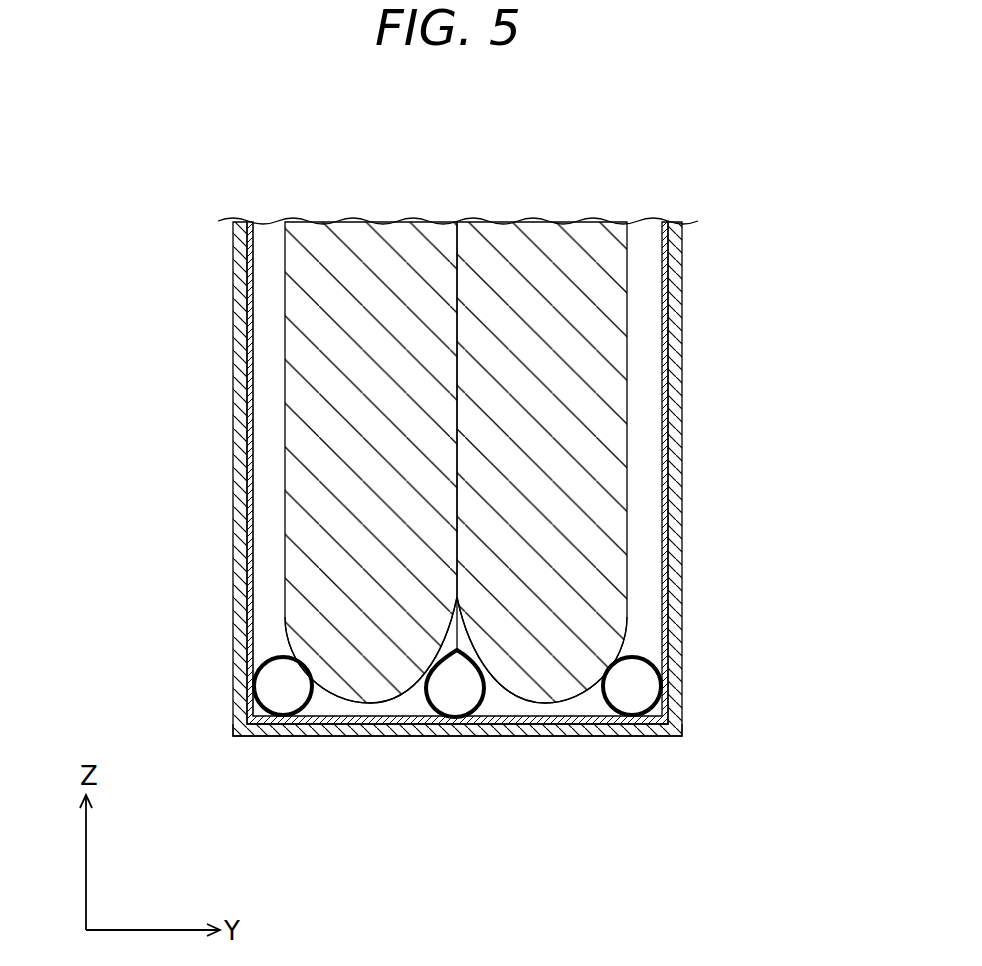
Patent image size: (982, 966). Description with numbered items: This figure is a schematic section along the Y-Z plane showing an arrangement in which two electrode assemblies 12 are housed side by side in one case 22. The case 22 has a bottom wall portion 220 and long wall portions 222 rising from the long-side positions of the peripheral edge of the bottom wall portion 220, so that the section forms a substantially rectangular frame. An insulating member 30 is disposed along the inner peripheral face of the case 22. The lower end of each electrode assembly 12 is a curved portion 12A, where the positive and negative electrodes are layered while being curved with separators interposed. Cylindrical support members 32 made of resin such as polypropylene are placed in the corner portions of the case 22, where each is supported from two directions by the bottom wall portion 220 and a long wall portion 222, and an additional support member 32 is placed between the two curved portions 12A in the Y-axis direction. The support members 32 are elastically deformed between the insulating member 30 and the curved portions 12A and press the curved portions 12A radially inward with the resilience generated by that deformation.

The electrode assembly 12 is at (463, 528).
The curved portion 12A is at (370, 704).
The case 22 is at (517, 539).
The long wall portion 222 is at (682, 423).
The bottom wall portion 220 is at (610, 738).
The insulating member 30 is at (253, 267).
The support member 32 is at (642, 655).